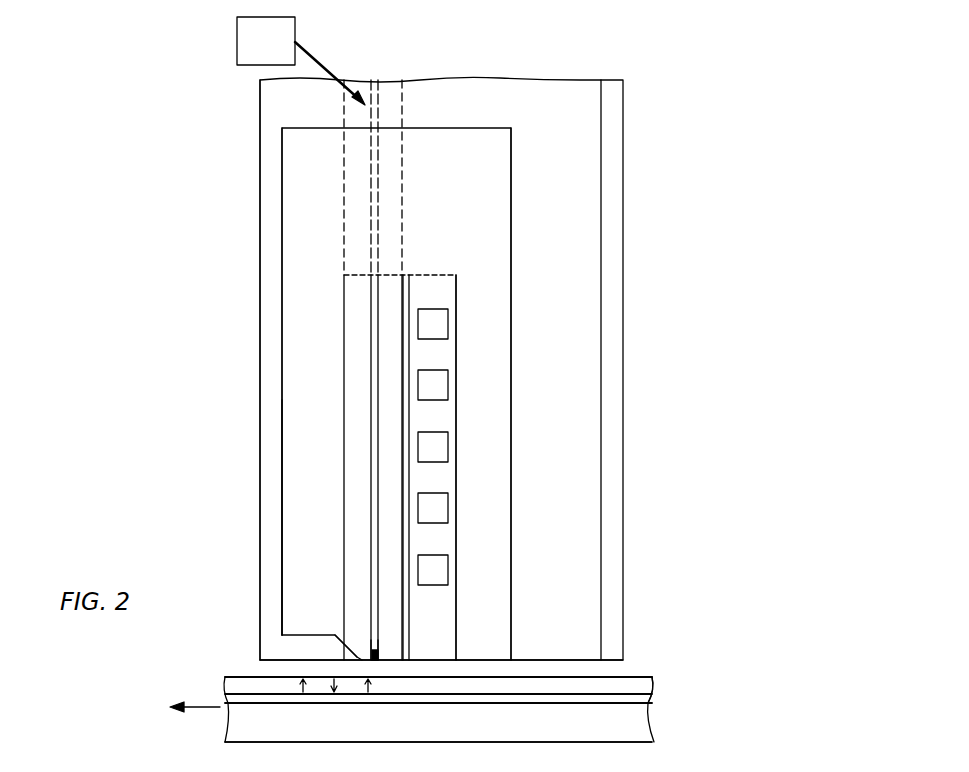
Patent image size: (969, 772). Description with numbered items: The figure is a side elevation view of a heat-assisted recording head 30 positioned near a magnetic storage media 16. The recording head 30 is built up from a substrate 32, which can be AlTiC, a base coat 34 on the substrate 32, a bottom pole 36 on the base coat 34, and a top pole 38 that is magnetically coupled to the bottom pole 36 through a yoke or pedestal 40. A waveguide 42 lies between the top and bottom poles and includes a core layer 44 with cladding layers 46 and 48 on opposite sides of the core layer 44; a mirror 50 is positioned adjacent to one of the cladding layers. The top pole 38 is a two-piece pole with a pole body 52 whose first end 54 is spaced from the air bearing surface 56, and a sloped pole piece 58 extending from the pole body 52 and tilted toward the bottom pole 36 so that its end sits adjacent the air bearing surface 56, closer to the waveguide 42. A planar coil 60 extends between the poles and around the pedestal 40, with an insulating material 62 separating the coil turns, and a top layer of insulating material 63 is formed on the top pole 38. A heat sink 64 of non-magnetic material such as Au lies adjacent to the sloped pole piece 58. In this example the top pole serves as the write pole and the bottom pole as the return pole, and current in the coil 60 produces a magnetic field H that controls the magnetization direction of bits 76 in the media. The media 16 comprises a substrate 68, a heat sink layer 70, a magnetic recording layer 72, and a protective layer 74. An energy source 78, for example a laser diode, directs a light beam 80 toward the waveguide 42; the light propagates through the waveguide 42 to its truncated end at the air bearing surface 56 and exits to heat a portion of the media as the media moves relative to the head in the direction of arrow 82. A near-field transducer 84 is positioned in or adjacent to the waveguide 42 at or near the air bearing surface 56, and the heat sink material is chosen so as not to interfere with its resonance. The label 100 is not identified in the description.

The magnetic storage media 16 is at (665, 665).
The recording head 30 is at (220, 146).
The substrate 32 is at (612, 90).
The base coat 34 is at (557, 95).
The bottom pole 36 is at (511, 412).
The top pole 38 is at (292, 448).
The yoke or pedestal 40 is at (450, 140).
The waveguide 42 is at (344, 72).
The core layer 44 is at (378, 348).
The cladding layer 46 is at (387, 306).
The cladding layer 48 is at (357, 393).
The mirror 50 is at (403, 278).
The pole body 52 is at (292, 545).
The first end 54 is at (295, 637).
The air bearing surface 56 is at (432, 660).
The sloped pole piece 58 is at (350, 648).
The planar coil 60 is at (442, 450).
The insulating material 62 is at (453, 622).
The top layer of insulating material 63 is at (272, 206).
The heat sink 64 is at (368, 655).
The substrate 68 is at (600, 728).
The heat sink layer 70 is at (655, 702).
The magnetic recording layer 72 is at (645, 686).
The protective layer 74 is at (637, 677).
The bits 76 is at (290, 690).
The energy source 78 is at (237, 42).
The light beam 80 is at (322, 70).
The arrow 82 is at (197, 708).
The near-field transducer 84 is at (380, 655).
The page reference 100 is at (833, 757).